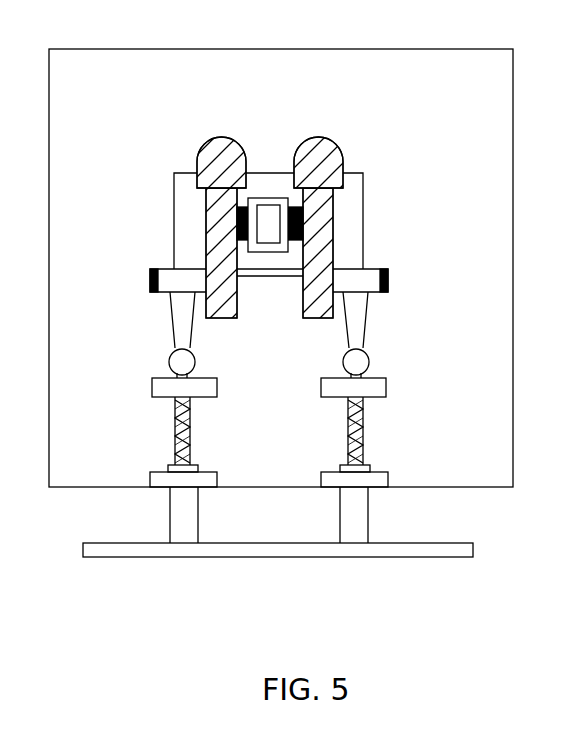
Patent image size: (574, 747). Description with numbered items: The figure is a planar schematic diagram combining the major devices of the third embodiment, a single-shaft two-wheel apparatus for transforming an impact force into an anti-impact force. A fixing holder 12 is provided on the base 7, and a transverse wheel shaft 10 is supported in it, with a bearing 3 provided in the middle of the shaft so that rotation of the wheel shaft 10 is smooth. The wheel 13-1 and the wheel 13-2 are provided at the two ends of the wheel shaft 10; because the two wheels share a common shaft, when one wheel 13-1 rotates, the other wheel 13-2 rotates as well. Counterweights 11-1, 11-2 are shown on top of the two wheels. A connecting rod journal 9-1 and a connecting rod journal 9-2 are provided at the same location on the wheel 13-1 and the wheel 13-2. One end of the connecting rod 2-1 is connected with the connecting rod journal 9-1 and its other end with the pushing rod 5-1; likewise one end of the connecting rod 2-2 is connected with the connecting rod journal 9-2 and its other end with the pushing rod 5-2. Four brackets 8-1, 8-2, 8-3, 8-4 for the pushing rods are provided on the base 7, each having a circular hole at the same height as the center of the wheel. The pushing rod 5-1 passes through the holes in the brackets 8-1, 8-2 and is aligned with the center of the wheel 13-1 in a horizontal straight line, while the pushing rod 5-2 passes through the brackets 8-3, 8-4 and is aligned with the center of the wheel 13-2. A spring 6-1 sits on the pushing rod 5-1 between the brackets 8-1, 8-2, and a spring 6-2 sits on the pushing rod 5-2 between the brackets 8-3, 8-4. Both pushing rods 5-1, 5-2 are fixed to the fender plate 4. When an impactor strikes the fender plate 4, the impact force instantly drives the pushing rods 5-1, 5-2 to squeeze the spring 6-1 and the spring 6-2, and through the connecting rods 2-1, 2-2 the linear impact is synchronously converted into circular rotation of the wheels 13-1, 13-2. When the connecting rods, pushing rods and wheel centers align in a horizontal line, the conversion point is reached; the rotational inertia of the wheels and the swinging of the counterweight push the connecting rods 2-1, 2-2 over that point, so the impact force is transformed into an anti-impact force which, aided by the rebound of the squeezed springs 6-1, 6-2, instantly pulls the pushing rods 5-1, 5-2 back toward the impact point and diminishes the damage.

The base 7 is at (95, 92).
The fixing holder 12 is at (174, 195).
The connecting rod journal 9-1 is at (142, 295).
The connecting rod journal 9-2 is at (393, 290).
The wheel 13-1 is at (205, 243).
The wheel 13-2 is at (334, 243).
The first knob 11-1 is at (194, 152).
The second knob 11-2 is at (345, 152).
The wheel shaft 10 is at (292, 200).
The bearing 3 is at (263, 250).
The connecting rod 2-1 is at (165, 318).
The connecting rod 2-2 is at (368, 322).
The bracket for the pushing rod 8-2 is at (150, 387).
The bracket for the pushing rod 8-4 is at (388, 395).
The spring 6-1 is at (157, 433).
The spring 6-2 is at (368, 435).
The bracket for the pushing rod 8-1 is at (150, 488).
The bracket for the pushing rod 8-3 is at (388, 487).
The pushing rod 5-1 is at (195, 522).
The pushing rod 5-2 is at (368, 520).
The fender plate 4 is at (268, 558).